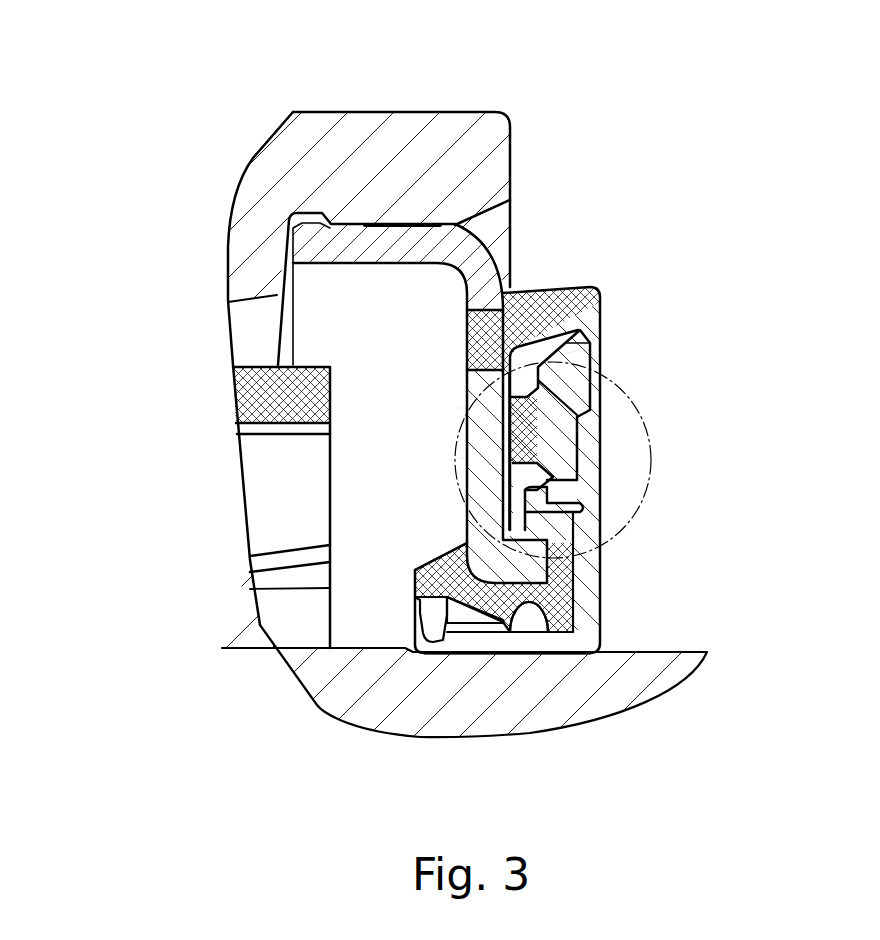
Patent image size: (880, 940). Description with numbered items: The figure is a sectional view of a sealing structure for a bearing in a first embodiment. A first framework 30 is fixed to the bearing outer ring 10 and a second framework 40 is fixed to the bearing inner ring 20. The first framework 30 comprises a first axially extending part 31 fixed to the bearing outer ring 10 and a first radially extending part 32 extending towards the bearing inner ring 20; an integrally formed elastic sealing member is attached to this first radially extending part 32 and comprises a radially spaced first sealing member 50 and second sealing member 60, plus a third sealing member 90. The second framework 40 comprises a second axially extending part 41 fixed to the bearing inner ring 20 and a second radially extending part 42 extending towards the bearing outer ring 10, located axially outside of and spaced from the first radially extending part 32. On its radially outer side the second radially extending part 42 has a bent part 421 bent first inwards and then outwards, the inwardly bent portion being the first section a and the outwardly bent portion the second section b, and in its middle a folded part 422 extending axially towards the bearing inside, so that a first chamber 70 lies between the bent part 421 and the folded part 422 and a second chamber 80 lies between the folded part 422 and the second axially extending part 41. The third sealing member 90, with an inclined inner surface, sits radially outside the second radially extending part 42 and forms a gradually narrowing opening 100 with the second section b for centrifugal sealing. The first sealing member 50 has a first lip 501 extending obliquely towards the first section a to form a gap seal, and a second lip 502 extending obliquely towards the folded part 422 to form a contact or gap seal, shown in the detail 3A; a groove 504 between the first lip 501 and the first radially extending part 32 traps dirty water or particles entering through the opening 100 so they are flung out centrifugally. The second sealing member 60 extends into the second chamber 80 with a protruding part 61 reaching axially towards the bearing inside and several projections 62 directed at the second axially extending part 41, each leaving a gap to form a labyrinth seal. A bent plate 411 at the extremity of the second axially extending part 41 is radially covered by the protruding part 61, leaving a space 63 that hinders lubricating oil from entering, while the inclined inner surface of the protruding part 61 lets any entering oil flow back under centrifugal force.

The bearing outer ring 10 is at (270, 185).
The bearing inner ring 20 is at (635, 685).
The first framework 30 is at (310, 237).
The first axially extending part 31 is at (397, 235).
The first radially extending part 32 is at (480, 294).
The second framework 40 is at (600, 650).
The second axially extending part 41 is at (557, 640).
The second radially extending part 42 is at (590, 592).
The first sealing member 50 is at (467, 457).
The second sealing member 60 is at (477, 598).
The protruding part 61 is at (420, 577).
The projections 62 is at (495, 608).
The space 63 is at (420, 598).
The first chamber 70 is at (600, 483).
The second chamber 80 is at (528, 623).
The third sealing member 90 is at (523, 297).
The gradually narrowing opening 100 is at (590, 290).
The bent plate 411 is at (420, 627).
The bent part 421 is at (590, 377).
The folded part 422 is at (592, 520).
The first lip 501 is at (467, 422).
The second lip 502 is at (467, 457).
The groove 504 is at (467, 408).
The detail view reference 3A is at (640, 432).
The first section a is at (590, 410).
The second section b is at (590, 343).